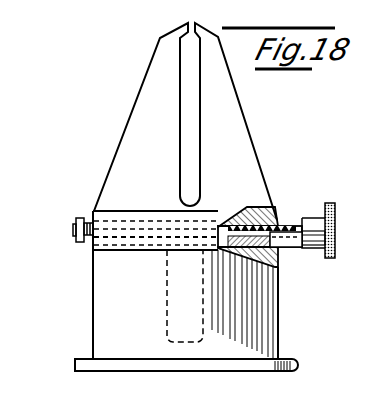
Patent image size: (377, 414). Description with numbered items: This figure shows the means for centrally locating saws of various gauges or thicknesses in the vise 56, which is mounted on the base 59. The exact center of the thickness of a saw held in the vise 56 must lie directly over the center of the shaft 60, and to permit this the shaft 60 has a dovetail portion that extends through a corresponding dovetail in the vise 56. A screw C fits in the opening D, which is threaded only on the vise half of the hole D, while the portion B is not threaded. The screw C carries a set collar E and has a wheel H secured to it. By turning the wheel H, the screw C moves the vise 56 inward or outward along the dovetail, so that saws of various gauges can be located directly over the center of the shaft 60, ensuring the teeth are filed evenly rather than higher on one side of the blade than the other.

The vise 56 is at (233, 107).
The base 59 is at (280, 312).
The shaft 60 is at (166, 300).
The set collar E is at (77, 216).
The opening D is at (290, 225).
The screw C is at (298, 225).
The unthreaded portion B is at (285, 249).
The wheel H is at (335, 207).